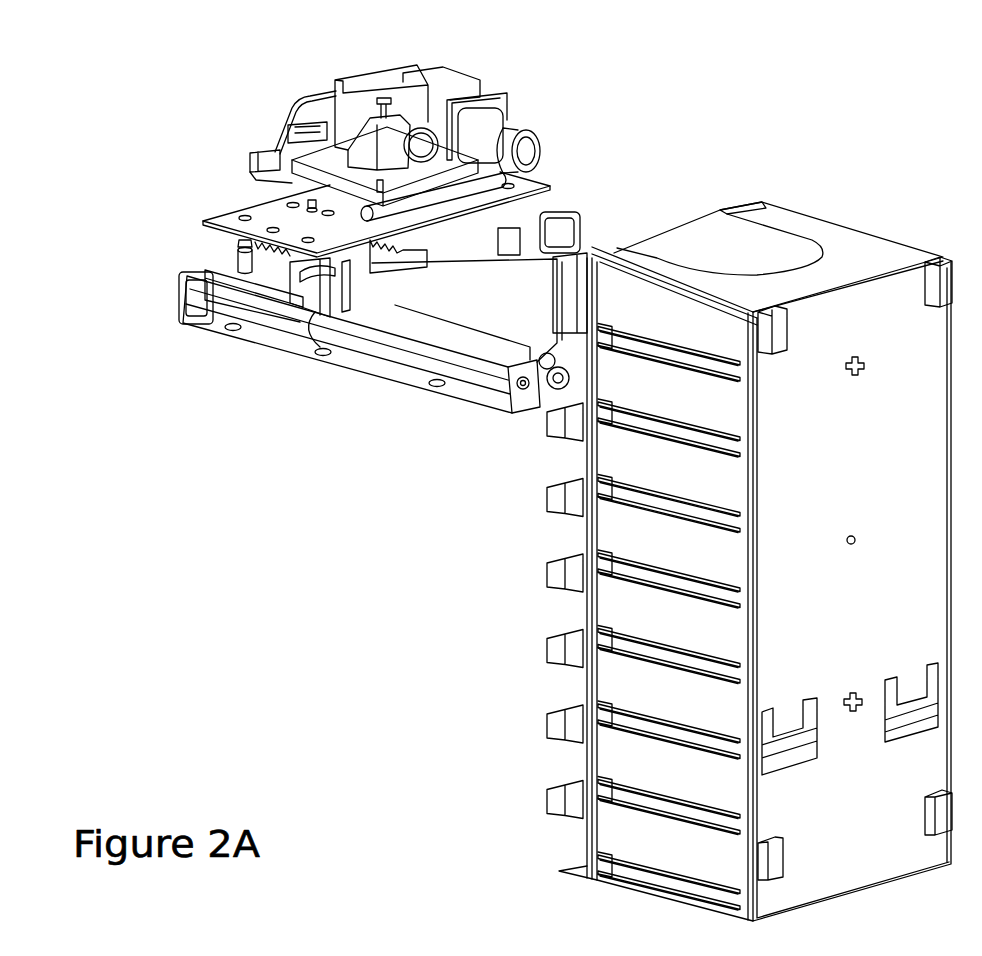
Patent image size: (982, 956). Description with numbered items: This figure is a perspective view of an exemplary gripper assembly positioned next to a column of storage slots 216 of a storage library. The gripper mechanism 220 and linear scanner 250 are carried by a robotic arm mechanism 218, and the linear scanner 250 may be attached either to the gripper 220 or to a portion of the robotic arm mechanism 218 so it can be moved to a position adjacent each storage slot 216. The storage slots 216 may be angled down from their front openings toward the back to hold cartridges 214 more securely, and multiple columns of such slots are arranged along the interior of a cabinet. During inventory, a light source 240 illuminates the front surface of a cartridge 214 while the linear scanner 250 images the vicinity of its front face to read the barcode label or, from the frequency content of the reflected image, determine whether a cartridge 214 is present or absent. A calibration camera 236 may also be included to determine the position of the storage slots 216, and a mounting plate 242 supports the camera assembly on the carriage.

The cartridge 214 is at (652, 252).
The storage slot 216 is at (535, 678).
The robotic arm mechanism 218 is at (420, 352).
The gripper mechanism 220 is at (557, 228).
The calibration camera 236 is at (520, 128).
The light source 240 is at (350, 223).
The camera mounting plate 242 is at (367, 208).
The linear scanner 250 is at (370, 128).